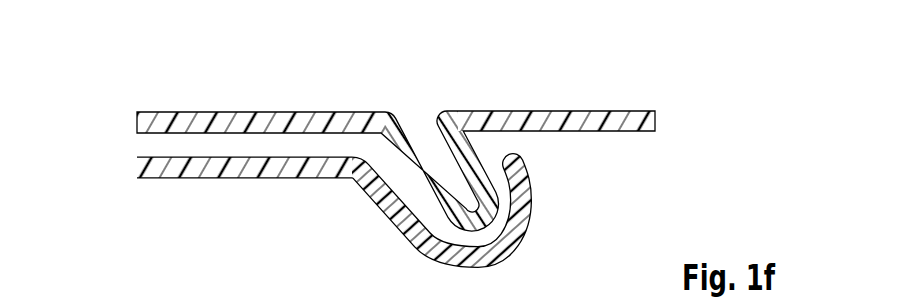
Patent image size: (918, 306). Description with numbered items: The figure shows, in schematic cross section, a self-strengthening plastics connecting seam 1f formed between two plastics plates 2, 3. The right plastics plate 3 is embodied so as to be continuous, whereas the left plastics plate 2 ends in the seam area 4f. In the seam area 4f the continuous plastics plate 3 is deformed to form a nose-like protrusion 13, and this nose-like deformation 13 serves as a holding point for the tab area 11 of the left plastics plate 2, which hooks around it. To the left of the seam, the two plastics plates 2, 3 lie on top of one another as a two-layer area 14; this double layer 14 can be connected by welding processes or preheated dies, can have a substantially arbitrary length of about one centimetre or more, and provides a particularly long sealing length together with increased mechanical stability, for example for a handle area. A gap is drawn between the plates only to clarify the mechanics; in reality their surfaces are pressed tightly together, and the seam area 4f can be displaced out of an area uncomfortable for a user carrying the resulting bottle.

The plastics connecting seam 1f is at (640, 78).
The plastics plate 2 is at (377, 212).
The plastics plate 3 is at (396, 143).
The seam area 4f is at (546, 239).
The tab area 11 is at (523, 203).
The nose-like protrusion 13 is at (483, 175).
The two-layer area 14 is at (380, 138).